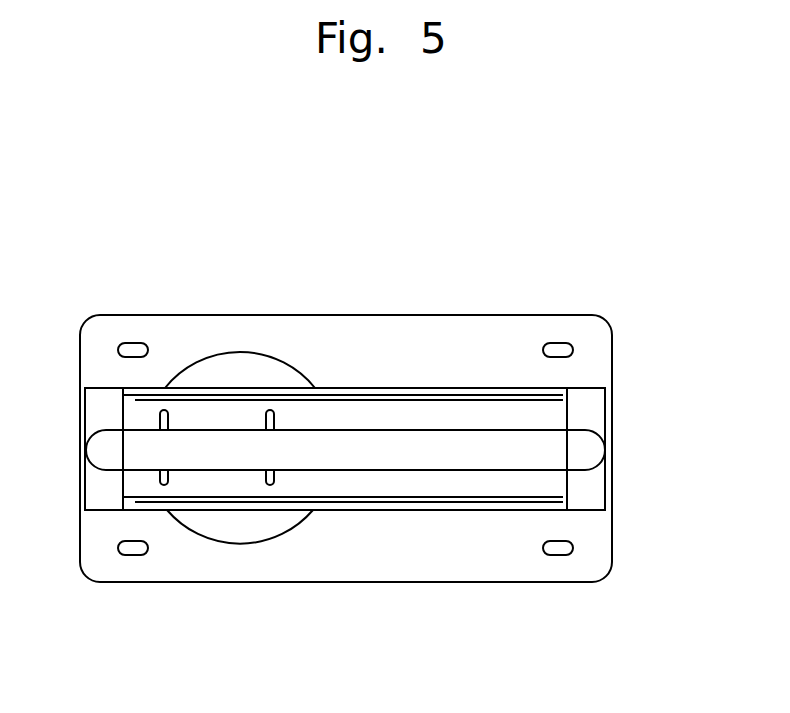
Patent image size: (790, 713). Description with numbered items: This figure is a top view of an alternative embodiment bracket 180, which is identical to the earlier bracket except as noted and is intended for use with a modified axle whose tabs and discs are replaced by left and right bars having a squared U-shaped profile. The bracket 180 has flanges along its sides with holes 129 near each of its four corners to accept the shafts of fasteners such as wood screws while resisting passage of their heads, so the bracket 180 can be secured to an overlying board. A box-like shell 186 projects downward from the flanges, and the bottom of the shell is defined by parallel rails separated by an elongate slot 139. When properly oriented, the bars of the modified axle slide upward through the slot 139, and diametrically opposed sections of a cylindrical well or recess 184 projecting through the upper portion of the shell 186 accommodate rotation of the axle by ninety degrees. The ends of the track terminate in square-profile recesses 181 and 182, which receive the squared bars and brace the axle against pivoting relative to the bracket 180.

The alternative embodiment bracket 180 is at (533, 245).
The holes 129 is at (135, 347).
The cylindrical well or recess 184 is at (255, 365).
The recess 181 is at (103, 497).
The recess 182 is at (598, 400).
The shell 186 is at (430, 500).
The elongate slot 139 is at (593, 455).